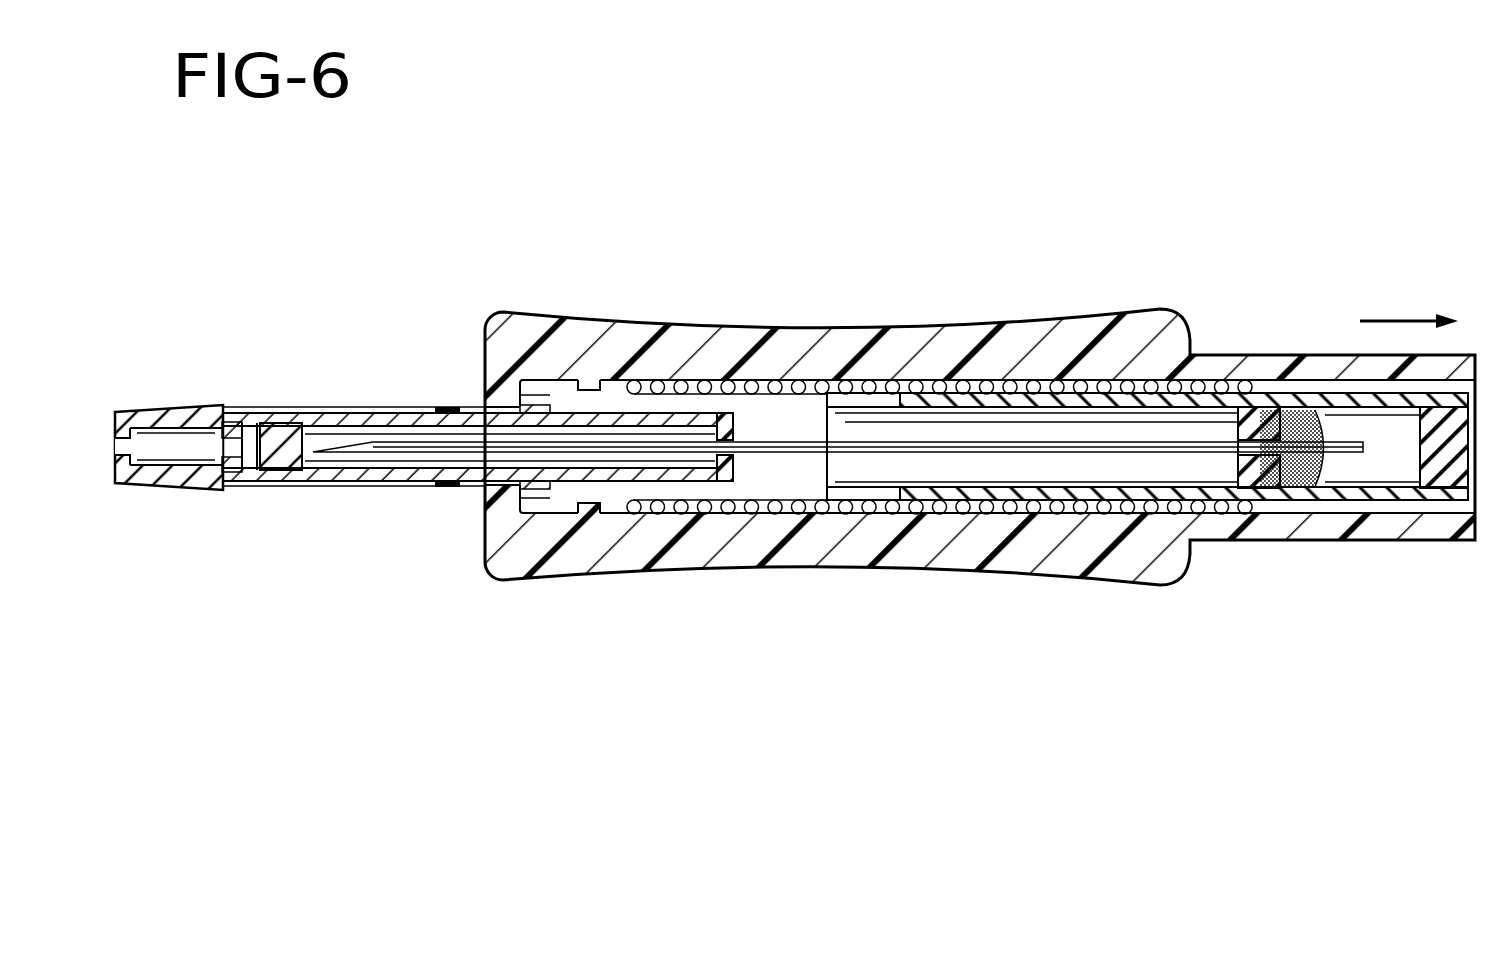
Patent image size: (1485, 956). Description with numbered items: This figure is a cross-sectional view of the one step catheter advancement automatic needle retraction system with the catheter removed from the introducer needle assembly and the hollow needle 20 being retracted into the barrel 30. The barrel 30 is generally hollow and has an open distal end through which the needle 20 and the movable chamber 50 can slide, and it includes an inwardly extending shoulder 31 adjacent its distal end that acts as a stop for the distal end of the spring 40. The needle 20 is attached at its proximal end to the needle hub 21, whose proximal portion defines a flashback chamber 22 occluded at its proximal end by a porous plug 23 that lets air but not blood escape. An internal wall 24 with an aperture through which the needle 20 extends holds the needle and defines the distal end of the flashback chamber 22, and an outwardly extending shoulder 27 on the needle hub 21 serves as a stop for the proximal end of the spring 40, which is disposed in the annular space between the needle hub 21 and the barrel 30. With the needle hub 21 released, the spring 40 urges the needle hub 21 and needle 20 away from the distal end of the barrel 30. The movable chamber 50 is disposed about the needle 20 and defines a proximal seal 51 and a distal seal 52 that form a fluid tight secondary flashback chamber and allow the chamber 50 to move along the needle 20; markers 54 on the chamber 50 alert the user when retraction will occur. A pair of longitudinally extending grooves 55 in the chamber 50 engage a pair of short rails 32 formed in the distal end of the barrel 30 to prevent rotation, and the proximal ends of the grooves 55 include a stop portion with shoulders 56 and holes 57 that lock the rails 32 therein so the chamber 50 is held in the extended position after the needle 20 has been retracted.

The hollow needle 20 is at (414, 451).
The needle hub 21 is at (1333, 503).
The flashback chamber 22 is at (1368, 494).
The porous plug 23 is at (1440, 462).
The internal wall 24 is at (1258, 400).
The outwardly extending shoulder 27 is at (1262, 512).
The barrel 30 is at (686, 578).
The inwardly extending shoulder 31 is at (590, 383).
The short rails 32 is at (500, 380).
The spring 40 is at (705, 386).
The movable chamber 50 is at (175, 406).
The proximal seal 51 is at (738, 472).
The distal seal 52 is at (292, 466).
The markers 54 is at (445, 407).
The longitudinally extending grooves 55 is at (284, 407).
The shoulders 56 is at (512, 405).
The holes 57 is at (497, 395).